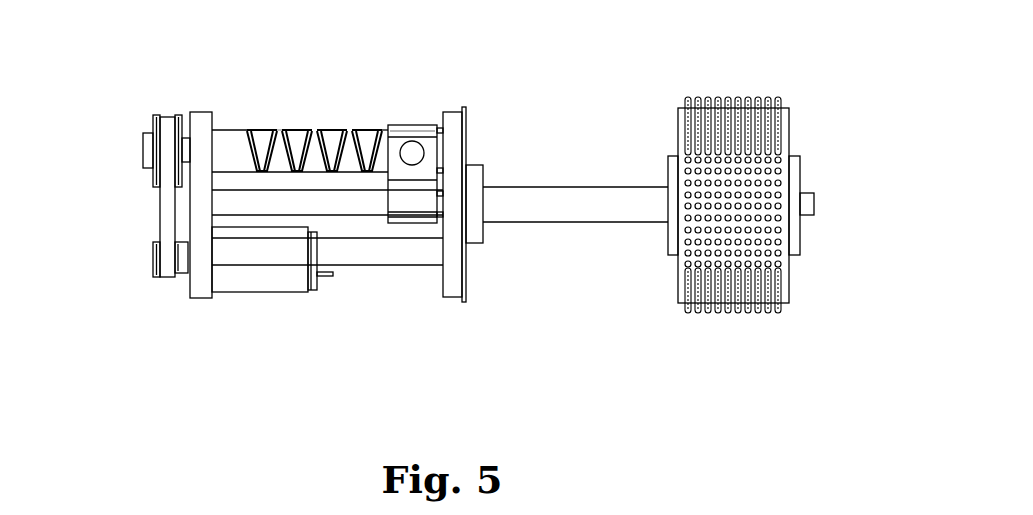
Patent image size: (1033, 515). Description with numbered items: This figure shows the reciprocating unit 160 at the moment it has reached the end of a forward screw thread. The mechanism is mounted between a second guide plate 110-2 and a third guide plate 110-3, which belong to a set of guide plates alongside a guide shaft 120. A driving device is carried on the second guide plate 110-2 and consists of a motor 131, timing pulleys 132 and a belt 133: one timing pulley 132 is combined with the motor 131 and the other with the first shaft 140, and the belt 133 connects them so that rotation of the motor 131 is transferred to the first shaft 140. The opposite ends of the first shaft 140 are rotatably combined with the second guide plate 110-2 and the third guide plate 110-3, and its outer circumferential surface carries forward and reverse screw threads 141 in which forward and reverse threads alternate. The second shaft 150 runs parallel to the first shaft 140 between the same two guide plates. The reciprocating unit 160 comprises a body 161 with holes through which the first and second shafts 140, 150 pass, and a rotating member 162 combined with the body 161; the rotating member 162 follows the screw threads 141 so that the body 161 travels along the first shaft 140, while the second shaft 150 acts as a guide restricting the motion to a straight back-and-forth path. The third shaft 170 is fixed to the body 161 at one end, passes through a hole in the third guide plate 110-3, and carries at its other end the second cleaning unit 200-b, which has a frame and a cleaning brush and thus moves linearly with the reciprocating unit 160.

The second guide plate 110-2 is at (197, 294).
The third guide plate 110-3 is at (467, 293).
The guide shaft 120 is at (377, 266).
The motor 131 is at (265, 293).
The timing pulleys 132 is at (143, 146).
The belt 133 is at (160, 212).
The first shaft 140 is at (230, 122).
The forward and reverse screw threads 141 is at (278, 134).
The second shaft 150 is at (333, 216).
The reciprocating unit 160 is at (425, 113).
The body 161 is at (396, 127).
The rotating member 162 is at (412, 163).
The third shaft 170 is at (572, 187).
The second cleaning unit 200-b is at (712, 84).